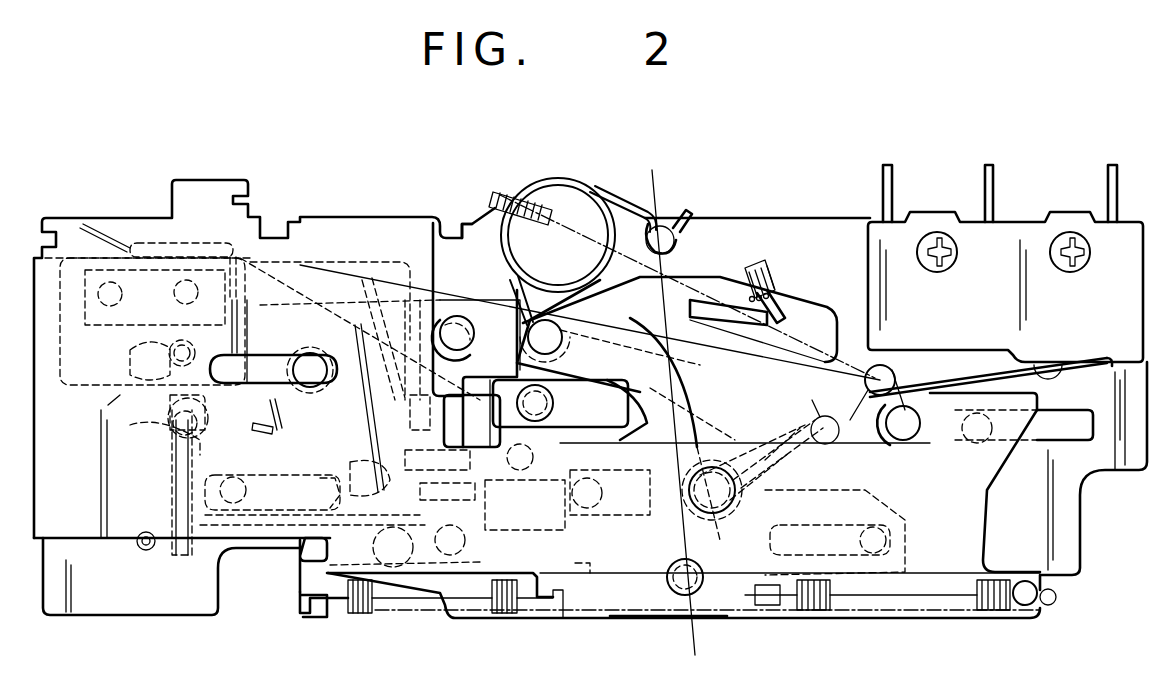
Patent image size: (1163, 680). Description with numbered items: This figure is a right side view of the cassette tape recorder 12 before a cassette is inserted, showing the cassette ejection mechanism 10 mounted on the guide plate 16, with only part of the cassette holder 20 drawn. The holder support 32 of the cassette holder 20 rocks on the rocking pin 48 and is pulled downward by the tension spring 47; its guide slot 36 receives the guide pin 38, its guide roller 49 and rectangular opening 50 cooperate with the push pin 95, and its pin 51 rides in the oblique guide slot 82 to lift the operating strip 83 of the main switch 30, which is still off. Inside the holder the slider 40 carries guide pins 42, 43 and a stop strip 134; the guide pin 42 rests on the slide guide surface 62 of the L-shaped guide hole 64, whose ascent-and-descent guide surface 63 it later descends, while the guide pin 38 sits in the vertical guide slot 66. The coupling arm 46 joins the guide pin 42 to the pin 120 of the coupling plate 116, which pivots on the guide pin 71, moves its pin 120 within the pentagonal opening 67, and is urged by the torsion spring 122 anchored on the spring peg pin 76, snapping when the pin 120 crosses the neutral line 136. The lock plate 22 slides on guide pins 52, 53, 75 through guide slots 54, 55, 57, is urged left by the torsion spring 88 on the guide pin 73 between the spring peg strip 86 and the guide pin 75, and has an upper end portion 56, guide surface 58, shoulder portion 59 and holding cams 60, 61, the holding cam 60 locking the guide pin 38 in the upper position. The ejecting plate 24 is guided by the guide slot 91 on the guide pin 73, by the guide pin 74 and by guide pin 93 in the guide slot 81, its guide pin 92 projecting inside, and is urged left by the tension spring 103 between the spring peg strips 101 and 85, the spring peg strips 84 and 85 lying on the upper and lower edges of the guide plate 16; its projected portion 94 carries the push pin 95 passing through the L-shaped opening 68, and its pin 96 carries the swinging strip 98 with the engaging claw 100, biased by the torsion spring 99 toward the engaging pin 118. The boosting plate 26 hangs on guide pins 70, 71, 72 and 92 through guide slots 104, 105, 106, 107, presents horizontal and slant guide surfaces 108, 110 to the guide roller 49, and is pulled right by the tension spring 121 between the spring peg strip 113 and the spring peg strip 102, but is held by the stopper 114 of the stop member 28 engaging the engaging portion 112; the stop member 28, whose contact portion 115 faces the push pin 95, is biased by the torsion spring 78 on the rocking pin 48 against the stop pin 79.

The cassette ejection mechanism 10 is at (470, 628).
The cassette tape recorder 12 is at (660, 168).
The guide plate 16 is at (783, 218).
The cassette holder 20 is at (115, 406).
The lock plate 22 is at (108, 383).
The ejecting plate 24 is at (88, 530).
The boosting plate 26 is at (905, 510).
The stop member 28 is at (728, 438).
The main switch 30 is at (1018, 222).
The holder support 32 is at (785, 352).
The guide slot 36 is at (168, 420).
The guide pin 38 is at (150, 445).
The slider 40 is at (84, 362).
The guide pin 42 is at (116, 300).
The guide pin 43 is at (198, 296).
The coupling arm 46 is at (356, 266).
The tension spring 47 is at (750, 265).
The rocking pin 48 is at (722, 515).
The guide roller 49 is at (472, 413).
The rectangular opening 50 is at (622, 345).
The pin 51 is at (886, 423).
The guide pin 52 is at (476, 333).
The guide pin 53 is at (192, 348).
The guide slot 54 is at (440, 290).
The guide slot 55 is at (140, 350).
The upper end portion 56 is at (375, 292).
The guide slot 57 is at (345, 475).
The guide surface 58 is at (395, 370).
The shoulder portion 59 is at (322, 502).
The holding cam 60 is at (205, 440).
The holding cam 61 is at (222, 568).
The slide guide surface 62 is at (252, 312).
The ascent-and-descent guide surface 63 is at (395, 330).
The guide hole 64 is at (420, 390).
The guide slot 66 is at (188, 570).
The pentagonal opening 67 is at (800, 310).
The L-shaped opening 68 is at (636, 430).
The guide pin 70 is at (465, 540).
The guide pin 71 is at (705, 578).
The guide pin 72 is at (886, 543).
The guide pin 73 is at (310, 352).
The guide pin 74 is at (145, 552).
The guide pin 75 is at (375, 450).
The spring peg pin 76 is at (676, 240).
The torsion spring 78 is at (778, 482).
The stop pin 79 is at (827, 444).
The guide slot 81 is at (1070, 440).
The guide slot 82 is at (893, 378).
The operating strip 83 is at (970, 390).
The spring peg strip 84 is at (478, 222).
The spring peg strip 85 is at (315, 612).
The spring peg strip 86 is at (278, 405).
The torsion spring 88 is at (300, 430).
The guide slot 91 is at (225, 385).
The guide pin 92 is at (246, 492).
The guide pin 93 is at (977, 440).
The projected portion 94 is at (490, 380).
The push pin 95 is at (548, 400).
The pin 96 is at (405, 530).
The swinging strip 98 is at (490, 495).
The torsion spring 99 is at (285, 520).
The engaging claw 100 is at (605, 505).
The spring peg strip 101 is at (553, 612).
The spring peg strip 102 is at (1048, 605).
The tension spring 103 is at (430, 610).
The guide slot 104 is at (478, 577).
The guide slot 105 is at (637, 618).
The guide slot 106 is at (835, 525).
The guide slot 107 is at (283, 478).
The horizontal guide surface 108 is at (410, 458).
The slant guide surface 110 is at (465, 488).
The engaging portion 112 is at (563, 530).
The spring peg strip 113 is at (768, 600).
The stopper 114 is at (592, 490).
The contact portion 115 is at (605, 398).
The coupling plate 116 is at (690, 368).
The engaging pin 118 is at (625, 505).
The pin 120 is at (572, 332).
The tension spring 121 is at (920, 608).
The torsion spring 122 is at (570, 183).
The stop strip 134 is at (240, 275).
The neutral line 136 is at (656, 208).